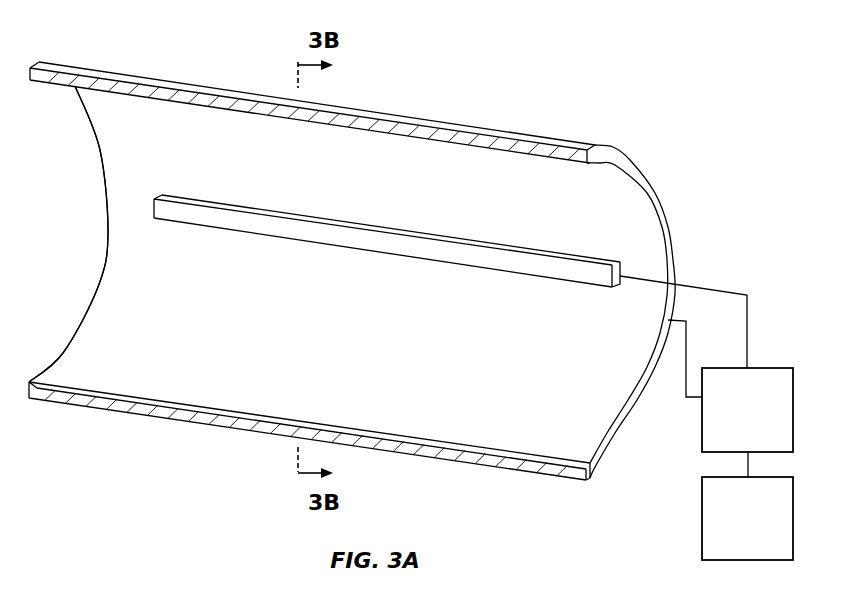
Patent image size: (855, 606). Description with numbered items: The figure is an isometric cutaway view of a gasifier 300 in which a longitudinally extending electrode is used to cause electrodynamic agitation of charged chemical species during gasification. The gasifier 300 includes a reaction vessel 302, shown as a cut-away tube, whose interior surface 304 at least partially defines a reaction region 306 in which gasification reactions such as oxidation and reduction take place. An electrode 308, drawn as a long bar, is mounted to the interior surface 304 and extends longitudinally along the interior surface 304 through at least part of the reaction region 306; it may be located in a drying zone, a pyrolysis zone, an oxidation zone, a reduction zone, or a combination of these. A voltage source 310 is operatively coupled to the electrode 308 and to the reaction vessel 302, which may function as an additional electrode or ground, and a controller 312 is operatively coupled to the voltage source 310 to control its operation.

The gasifier 300 is at (621, 71).
The reaction vessel 302 is at (453, 122).
The interior surface 304 is at (620, 205).
The reaction region 306 is at (620, 242).
The electrode 308 is at (298, 218).
The voltage source 310 is at (747, 410).
The controller 312 is at (747, 518).